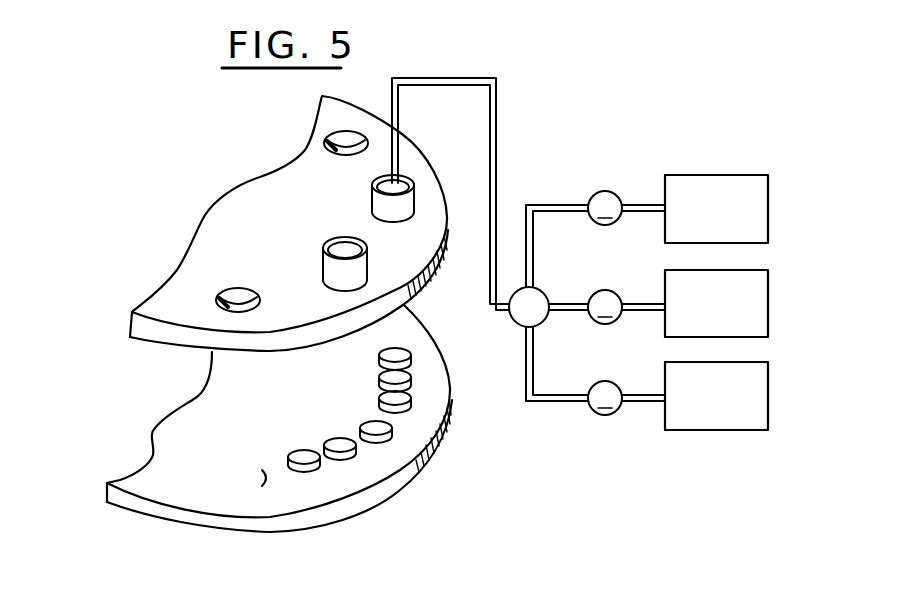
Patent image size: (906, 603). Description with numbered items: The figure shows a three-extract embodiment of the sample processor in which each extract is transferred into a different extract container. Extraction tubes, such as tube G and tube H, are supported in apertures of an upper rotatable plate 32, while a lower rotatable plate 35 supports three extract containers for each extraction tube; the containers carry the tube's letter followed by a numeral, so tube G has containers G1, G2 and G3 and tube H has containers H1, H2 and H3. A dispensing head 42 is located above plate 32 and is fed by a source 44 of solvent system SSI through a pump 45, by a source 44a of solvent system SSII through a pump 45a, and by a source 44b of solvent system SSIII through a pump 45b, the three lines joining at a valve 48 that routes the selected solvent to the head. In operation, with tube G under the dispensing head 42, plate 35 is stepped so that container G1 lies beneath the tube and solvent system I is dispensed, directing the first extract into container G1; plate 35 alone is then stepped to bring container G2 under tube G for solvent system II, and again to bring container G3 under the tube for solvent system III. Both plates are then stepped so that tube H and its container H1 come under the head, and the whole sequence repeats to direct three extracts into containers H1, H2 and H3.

The rotatable plate 32 is at (432, 288).
The second rotatable plate 35 is at (442, 350).
The dispensing head 42 is at (417, 170).
The extraction tube G is at (373, 207).
The extraction tube H is at (330, 273).
The extract container G1 is at (411, 365).
The extract container G2 is at (411, 385).
The extract container G3 is at (411, 403).
The extract container H1 is at (388, 440).
The extract container H2 is at (350, 458).
The extract container H3 is at (313, 472).
The valve 48 is at (543, 315).
The pump 45 is at (602, 192).
The pump 45a is at (608, 290).
The pump 45b is at (613, 408).
The source of solvent system 44 is at (703, 175).
The source of solvent system 44a is at (767, 287).
The source of solvent system 44b is at (728, 417).